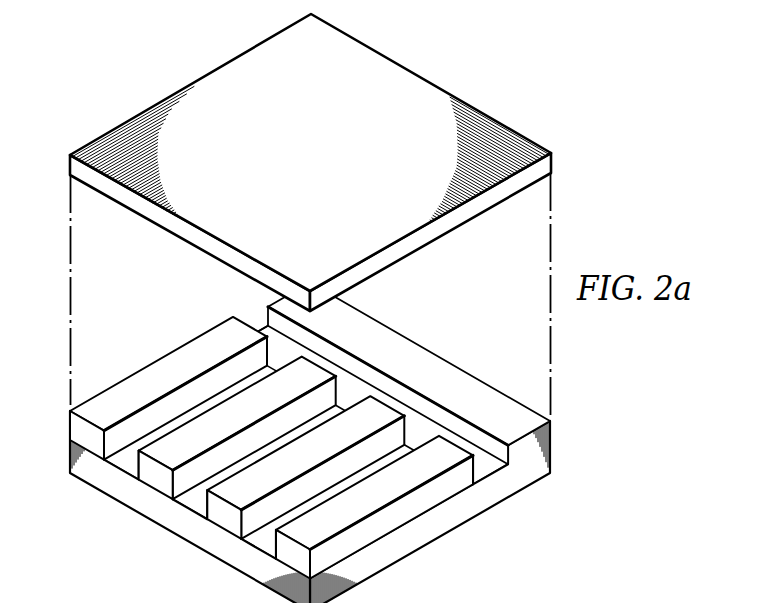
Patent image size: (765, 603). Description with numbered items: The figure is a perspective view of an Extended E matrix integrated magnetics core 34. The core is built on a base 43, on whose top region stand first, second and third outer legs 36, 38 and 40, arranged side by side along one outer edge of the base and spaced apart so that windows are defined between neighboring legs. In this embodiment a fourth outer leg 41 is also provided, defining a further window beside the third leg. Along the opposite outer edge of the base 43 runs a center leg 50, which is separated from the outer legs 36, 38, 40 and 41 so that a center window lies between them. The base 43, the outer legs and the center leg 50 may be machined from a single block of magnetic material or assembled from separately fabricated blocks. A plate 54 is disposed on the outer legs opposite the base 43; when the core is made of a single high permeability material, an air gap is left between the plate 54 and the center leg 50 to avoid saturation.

The Extended E core 34 is at (310, 162).
The plate 54 is at (433, 95).
The first outer leg 36 is at (133, 393).
The second outer leg 38 is at (305, 387).
The third outer leg 40 is at (368, 423).
The fourth outer leg 41 is at (368, 507).
The base 43 is at (170, 522).
The center leg 50 is at (503, 402).